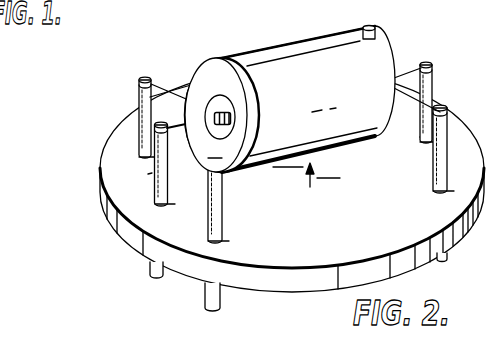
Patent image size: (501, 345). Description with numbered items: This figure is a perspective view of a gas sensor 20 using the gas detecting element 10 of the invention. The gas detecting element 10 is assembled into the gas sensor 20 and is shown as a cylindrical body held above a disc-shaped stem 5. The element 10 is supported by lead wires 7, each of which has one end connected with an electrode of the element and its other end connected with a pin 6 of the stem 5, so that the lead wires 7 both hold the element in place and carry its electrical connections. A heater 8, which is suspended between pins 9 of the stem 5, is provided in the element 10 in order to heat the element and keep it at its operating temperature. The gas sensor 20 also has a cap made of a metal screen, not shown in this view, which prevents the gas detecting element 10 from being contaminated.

The stem 5 is at (293, 253).
The pin 6 is at (138, 100).
The lead wire 7 is at (153, 81).
The heater 8 is at (233, 57).
The pin 9 is at (145, 172).
The gas detecting element 10 is at (306, 189).
The gas sensor 20 is at (255, 163).